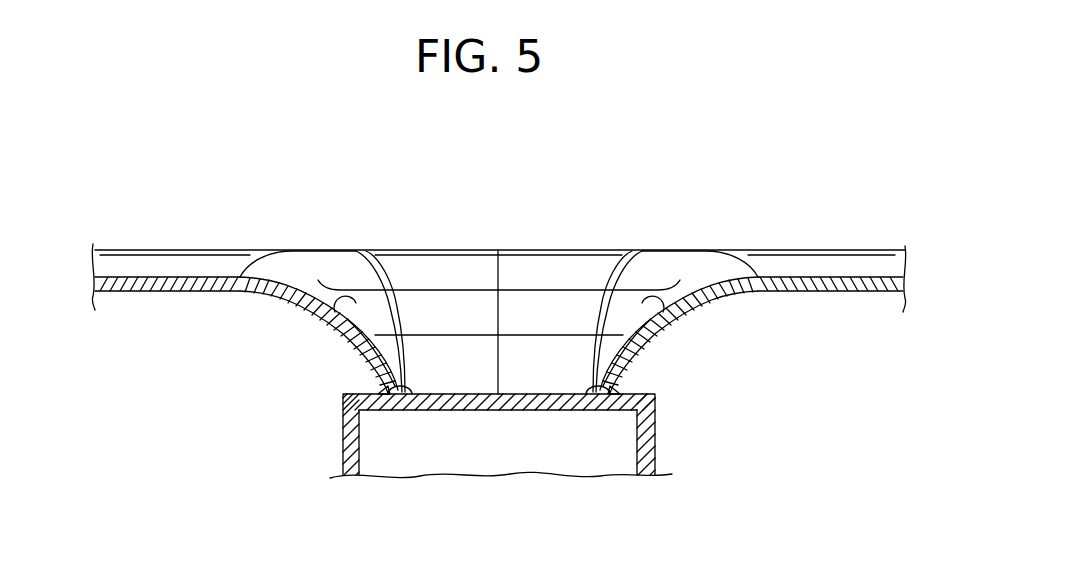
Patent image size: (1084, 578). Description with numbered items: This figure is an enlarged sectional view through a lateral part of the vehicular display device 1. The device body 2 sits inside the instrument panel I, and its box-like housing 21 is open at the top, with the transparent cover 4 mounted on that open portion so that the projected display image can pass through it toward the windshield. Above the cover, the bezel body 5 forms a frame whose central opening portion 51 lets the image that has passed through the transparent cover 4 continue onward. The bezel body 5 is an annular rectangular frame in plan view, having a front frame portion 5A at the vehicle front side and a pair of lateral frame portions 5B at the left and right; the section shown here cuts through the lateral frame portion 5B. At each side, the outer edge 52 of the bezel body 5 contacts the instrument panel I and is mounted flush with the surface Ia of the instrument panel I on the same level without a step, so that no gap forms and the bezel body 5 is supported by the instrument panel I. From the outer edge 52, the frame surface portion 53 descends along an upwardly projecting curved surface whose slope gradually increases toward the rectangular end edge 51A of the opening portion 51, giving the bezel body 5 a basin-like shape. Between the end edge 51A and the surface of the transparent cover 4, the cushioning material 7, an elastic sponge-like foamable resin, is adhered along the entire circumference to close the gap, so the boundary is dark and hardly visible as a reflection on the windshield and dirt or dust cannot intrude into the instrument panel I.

The vehicular display device 1 is at (437, 190).
The device body 2 is at (683, 415).
The transparent cover 4 is at (493, 403).
The bezel body 5 is at (538, 250).
The front frame portion 5A is at (487, 267).
The lateral frame portion 5B is at (288, 292).
The cushioning material 7 is at (383, 392).
The housing 21 is at (653, 458).
The opening portion 51 is at (523, 365).
The end edge 51A is at (412, 392).
The outer edge 52 is at (214, 274).
The frame surface portion 53 is at (522, 307).
The instrument panel I is at (113, 250).
The surface of the instrument panel Ia is at (157, 274).